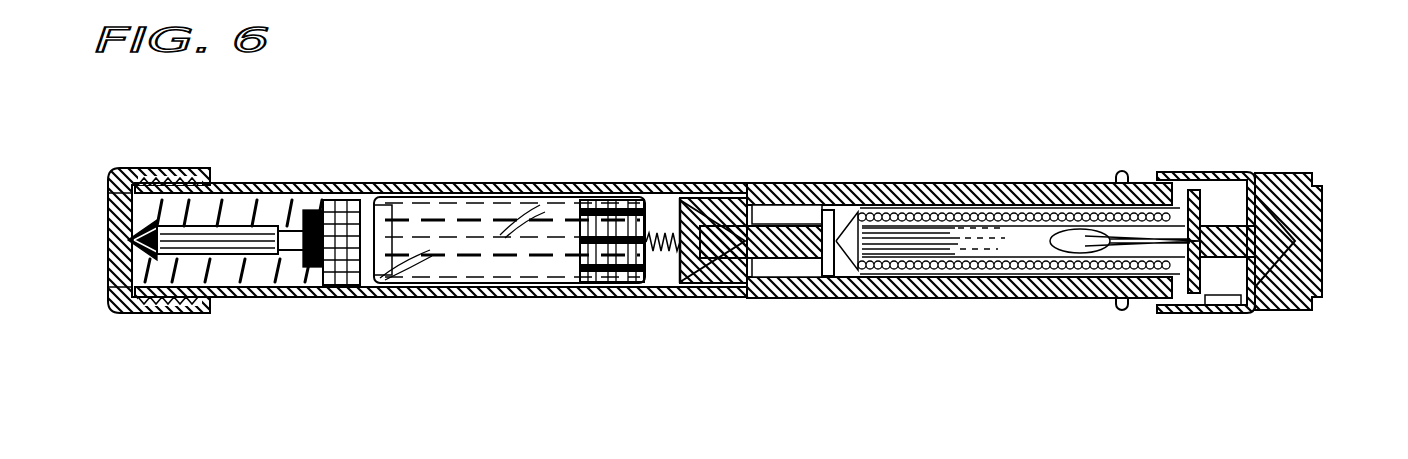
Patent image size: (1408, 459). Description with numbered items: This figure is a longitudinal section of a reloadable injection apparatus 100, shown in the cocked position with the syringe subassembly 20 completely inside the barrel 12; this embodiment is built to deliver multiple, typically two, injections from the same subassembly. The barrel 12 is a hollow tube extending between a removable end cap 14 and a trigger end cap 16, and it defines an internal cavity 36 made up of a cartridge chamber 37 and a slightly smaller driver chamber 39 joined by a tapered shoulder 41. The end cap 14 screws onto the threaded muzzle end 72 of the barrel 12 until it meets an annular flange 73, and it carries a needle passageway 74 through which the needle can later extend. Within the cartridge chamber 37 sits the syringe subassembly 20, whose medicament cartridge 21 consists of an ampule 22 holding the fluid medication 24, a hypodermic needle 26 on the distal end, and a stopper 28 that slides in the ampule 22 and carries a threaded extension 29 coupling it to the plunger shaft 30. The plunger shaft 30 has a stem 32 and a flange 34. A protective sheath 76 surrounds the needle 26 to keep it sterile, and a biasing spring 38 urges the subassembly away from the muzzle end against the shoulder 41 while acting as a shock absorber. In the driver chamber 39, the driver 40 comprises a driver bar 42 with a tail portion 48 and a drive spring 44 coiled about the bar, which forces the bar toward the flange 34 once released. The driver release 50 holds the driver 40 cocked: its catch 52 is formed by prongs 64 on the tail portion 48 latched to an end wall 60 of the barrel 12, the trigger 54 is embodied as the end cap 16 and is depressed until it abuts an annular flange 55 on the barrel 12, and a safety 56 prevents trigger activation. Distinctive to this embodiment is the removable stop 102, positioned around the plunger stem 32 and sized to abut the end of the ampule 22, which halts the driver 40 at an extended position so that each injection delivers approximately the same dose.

The reloadable injection apparatus 100 is at (893, 90).
The barrel 12 is at (467, 184).
The end cap 14 is at (138, 170).
The trigger end cap 16 is at (1258, 174).
The syringe subassembly 20 is at (499, 303).
The medicament cartridge 21 is at (362, 300).
The ampule 22 is at (720, 298).
The fluid medication 24 is at (543, 232).
The hypodermic needle 26 is at (190, 305).
The stopper 28 is at (581, 298).
The threaded extension 29 is at (643, 298).
The plunger shaft 30 is at (749, 298).
The stem 32 is at (804, 254).
The flange 34 is at (838, 280).
The internal cavity 36 is at (710, 196).
The cartridge chamber 37 is at (341, 198).
The biasing spring 38 is at (318, 205).
The driver chamber 39 is at (798, 212).
The driver 40 is at (936, 311).
The tapered shoulder 41 is at (762, 186).
The driver bar 42 is at (929, 240).
The drive spring 44 is at (980, 218).
The tail portion 48 is at (1023, 250).
The driver release 50 is at (1186, 329).
The catch 52 is at (1214, 312).
The trigger 54 is at (1199, 172).
The annular flange 55 is at (1122, 176).
The safety 56 is at (1324, 230).
The end wall 60 is at (1160, 302).
The prongs 64 is at (1107, 228).
The muzzle end 72 is at (150, 310).
The annular flange 73 is at (229, 178).
The needle passageway 74 is at (122, 240).
The protective sheath 76 is at (268, 298).
The removable stop 102 is at (679, 194).